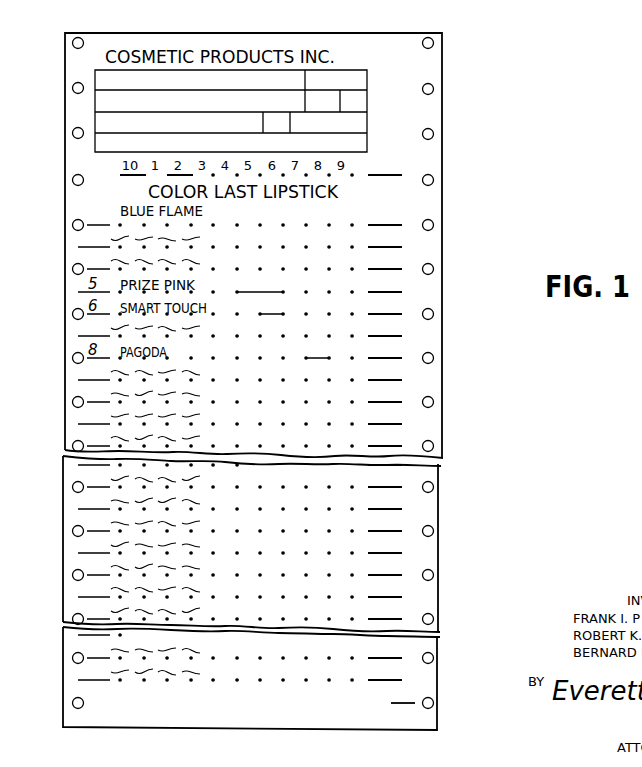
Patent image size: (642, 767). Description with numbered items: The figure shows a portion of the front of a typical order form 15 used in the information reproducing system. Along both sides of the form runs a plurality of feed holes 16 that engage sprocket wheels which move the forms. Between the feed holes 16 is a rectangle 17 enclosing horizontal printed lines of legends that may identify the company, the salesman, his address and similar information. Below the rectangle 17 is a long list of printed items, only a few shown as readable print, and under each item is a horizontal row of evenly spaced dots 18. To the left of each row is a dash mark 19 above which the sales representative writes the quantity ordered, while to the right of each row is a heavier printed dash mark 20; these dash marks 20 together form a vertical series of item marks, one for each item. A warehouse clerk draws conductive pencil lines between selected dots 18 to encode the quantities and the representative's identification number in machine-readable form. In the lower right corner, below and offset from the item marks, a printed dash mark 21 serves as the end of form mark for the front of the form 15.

The order form 15 is at (433, 210).
The feed holes 16 is at (73, 131).
The rectangle 17 is at (347, 70).
The dots 18 is at (283, 225).
The dash mark 19 is at (92, 248).
The dash mark (item mark) 20 is at (395, 293).
The dash mark (end of form mark) 21 is at (421, 701).